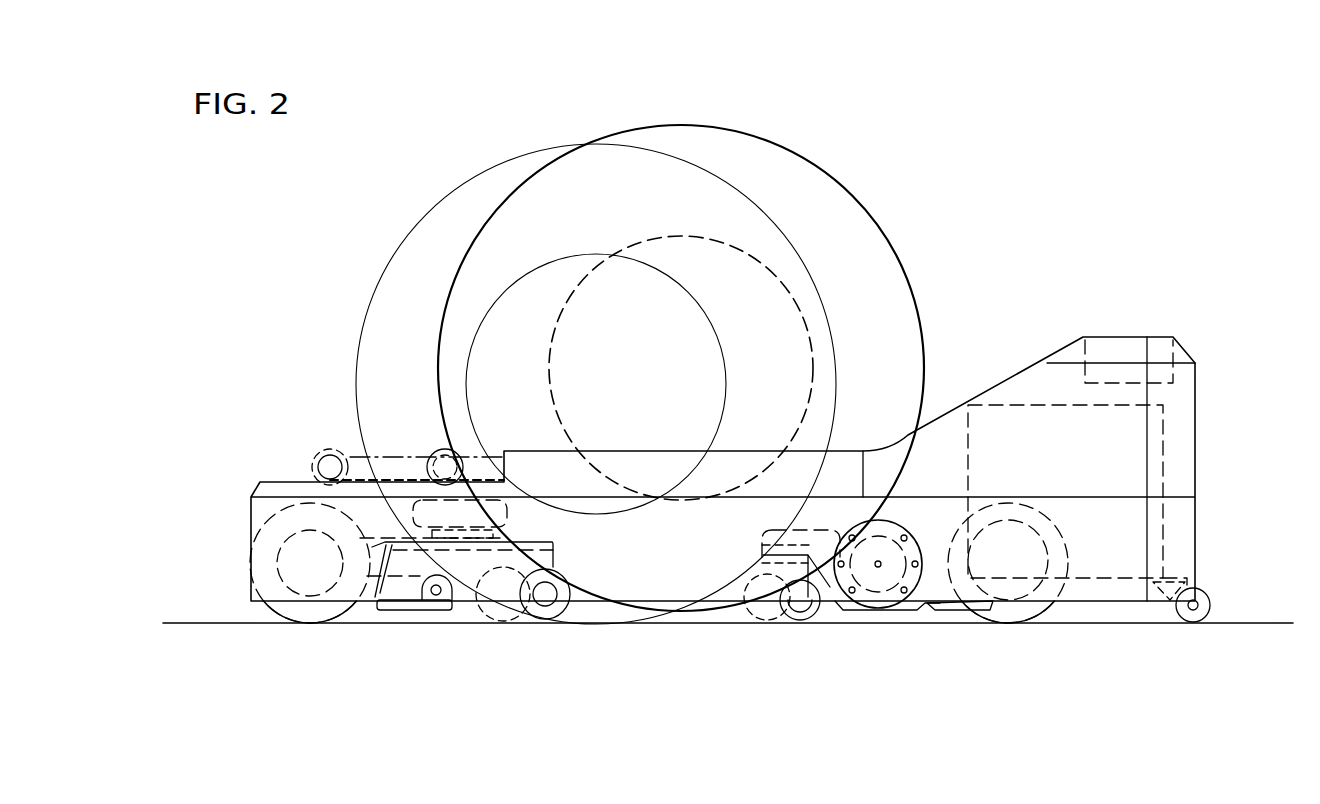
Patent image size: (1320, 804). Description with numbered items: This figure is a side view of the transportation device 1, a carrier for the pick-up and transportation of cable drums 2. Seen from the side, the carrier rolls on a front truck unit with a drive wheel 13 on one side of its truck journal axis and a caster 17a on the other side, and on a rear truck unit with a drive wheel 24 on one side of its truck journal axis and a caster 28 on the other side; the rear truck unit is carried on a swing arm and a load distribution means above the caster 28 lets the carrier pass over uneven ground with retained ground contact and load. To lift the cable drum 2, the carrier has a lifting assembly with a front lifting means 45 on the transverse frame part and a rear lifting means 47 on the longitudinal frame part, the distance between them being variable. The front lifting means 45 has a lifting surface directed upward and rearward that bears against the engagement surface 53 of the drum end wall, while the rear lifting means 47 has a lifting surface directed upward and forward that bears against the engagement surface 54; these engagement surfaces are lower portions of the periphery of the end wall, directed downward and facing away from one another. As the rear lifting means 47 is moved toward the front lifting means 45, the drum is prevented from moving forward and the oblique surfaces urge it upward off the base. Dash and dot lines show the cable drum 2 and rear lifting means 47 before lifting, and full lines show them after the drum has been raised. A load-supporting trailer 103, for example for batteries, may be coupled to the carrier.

The transportation device 1 is at (1099, 316).
The cable drum 2 is at (438, 210).
The drive wheel 13 is at (1010, 613).
The caster 17a is at (803, 622).
The drive wheel 24 is at (305, 610).
The caster 28 is at (558, 622).
The front lifting means 45 is at (894, 515).
The rear lifting means 47 is at (430, 445).
The engagement surface 53 is at (820, 567).
The engagement surface 54 is at (465, 488).
The load-supporting trailer 103 is at (1163, 453).